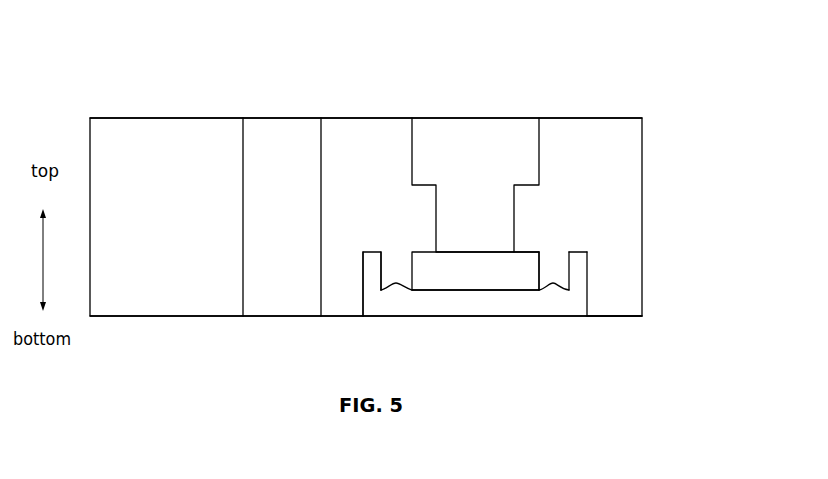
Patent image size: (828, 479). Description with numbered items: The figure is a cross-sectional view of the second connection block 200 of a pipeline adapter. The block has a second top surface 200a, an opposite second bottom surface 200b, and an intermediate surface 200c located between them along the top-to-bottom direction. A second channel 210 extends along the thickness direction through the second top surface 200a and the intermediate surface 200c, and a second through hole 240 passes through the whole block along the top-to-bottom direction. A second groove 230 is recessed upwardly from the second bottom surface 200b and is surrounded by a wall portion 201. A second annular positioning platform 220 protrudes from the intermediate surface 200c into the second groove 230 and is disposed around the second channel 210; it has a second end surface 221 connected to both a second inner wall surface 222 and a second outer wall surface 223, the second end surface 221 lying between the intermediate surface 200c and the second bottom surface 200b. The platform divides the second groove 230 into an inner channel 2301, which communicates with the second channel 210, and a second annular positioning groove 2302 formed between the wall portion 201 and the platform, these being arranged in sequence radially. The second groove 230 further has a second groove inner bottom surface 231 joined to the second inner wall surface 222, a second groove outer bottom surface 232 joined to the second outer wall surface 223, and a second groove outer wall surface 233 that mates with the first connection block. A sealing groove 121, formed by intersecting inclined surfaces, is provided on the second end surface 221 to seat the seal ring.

The second connection block 200 is at (396, 62).
The second top surface 200a is at (570, 118).
The second bottom surface 200b is at (625, 319).
The intermediate surface 200c is at (363, 278).
The wall portion 201 is at (613, 297).
The second channel 210 is at (485, 200).
The second annular positioning platform 220 is at (395, 267).
The second end surface 221 is at (397, 281).
The second inner wall surface 222 is at (413, 273).
The second outer wall surface 223 is at (382, 288).
The second groove 230 is at (485, 298).
The inner channel 2301 is at (522, 273).
The second annular positioning groove 2302 is at (578, 277).
The second groove inner bottom surface 231 is at (532, 250).
The second groove outer bottom surface 232 is at (577, 252).
The second groove outer wall surface 233 is at (587, 265).
The second through hole 240 is at (277, 167).
The sealing groove 121 is at (553, 287).